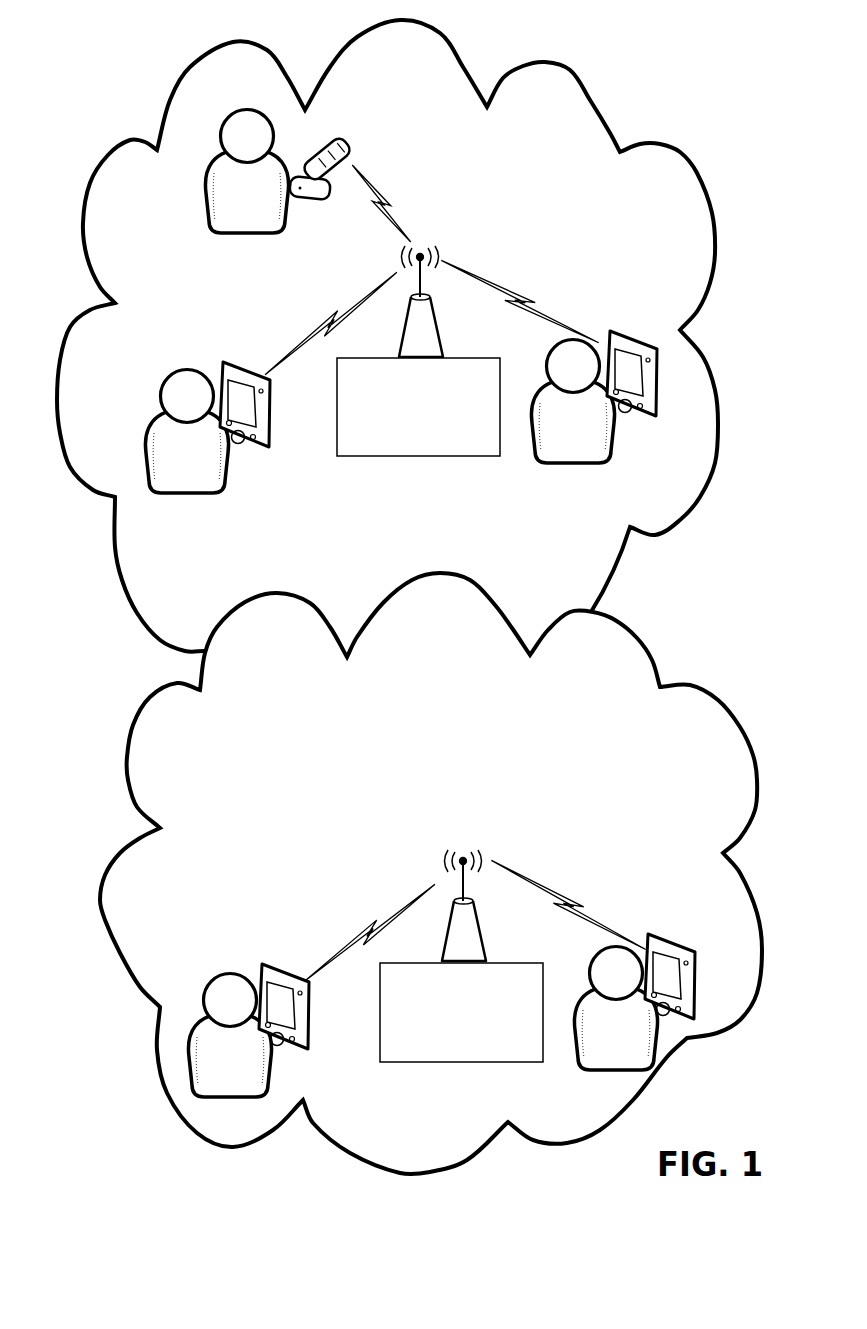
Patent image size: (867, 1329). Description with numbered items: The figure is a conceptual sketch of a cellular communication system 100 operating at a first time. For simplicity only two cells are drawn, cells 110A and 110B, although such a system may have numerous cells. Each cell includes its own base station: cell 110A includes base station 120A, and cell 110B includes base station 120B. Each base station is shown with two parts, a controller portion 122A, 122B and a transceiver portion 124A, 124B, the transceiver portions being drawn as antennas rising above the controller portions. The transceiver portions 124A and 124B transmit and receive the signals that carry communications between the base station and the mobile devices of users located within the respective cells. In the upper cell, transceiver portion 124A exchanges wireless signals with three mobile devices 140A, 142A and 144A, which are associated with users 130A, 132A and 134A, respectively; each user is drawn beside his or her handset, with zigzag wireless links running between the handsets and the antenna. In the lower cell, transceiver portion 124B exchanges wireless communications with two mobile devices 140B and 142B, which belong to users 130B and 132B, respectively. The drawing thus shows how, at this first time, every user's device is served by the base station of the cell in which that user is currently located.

The communication system 100 is at (673, 90).
The cell 110A is at (711, 200).
The cell 110B is at (647, 641).
The base station 120A is at (393, 433).
The base station 120B is at (436, 1037).
The controller portion 122A is at (337, 412).
The controller portion 122B is at (380, 1022).
The transceiver portion 124A is at (440, 333).
The transceiver portion 124B is at (487, 936).
The user 130A is at (170, 487).
The user 130B is at (230, 972).
The user 132A is at (557, 462).
The user 132B is at (580, 1053).
The user 134A is at (237, 230).
The mobile device 140A is at (253, 362).
The mobile device 140B is at (287, 970).
The mobile device 142A is at (633, 337).
The mobile device 142B is at (677, 937).
The mobile device 144A is at (328, 138).